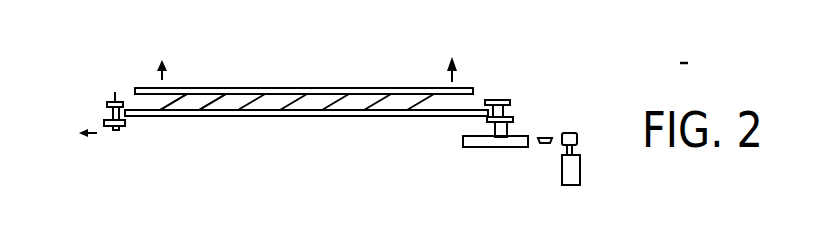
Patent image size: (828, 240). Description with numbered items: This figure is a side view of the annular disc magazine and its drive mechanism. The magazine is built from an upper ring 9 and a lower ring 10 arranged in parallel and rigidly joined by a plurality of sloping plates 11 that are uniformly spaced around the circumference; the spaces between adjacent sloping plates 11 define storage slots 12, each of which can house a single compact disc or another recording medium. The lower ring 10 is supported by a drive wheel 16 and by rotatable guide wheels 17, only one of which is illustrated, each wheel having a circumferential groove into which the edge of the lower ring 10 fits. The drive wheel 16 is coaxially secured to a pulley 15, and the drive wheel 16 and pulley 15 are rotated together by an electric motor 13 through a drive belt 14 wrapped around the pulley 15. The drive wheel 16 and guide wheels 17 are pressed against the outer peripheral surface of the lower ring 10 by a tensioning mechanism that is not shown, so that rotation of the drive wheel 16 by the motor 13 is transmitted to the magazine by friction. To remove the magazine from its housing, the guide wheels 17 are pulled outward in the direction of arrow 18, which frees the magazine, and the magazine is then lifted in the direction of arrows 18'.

The upper ring 9 is at (368, 88).
The lower ring 10 is at (373, 117).
The sloping plates 11 is at (325, 113).
The storage slots 12 is at (216, 112).
The electric motor 13 is at (580, 177).
The drive belt 14 is at (546, 132).
The pulley 15 is at (512, 148).
The drive wheel 16 is at (508, 103).
The guide wheels 17 is at (108, 105).
The arrow 18 is at (82, 166).
The arrows 18' is at (307, 41).